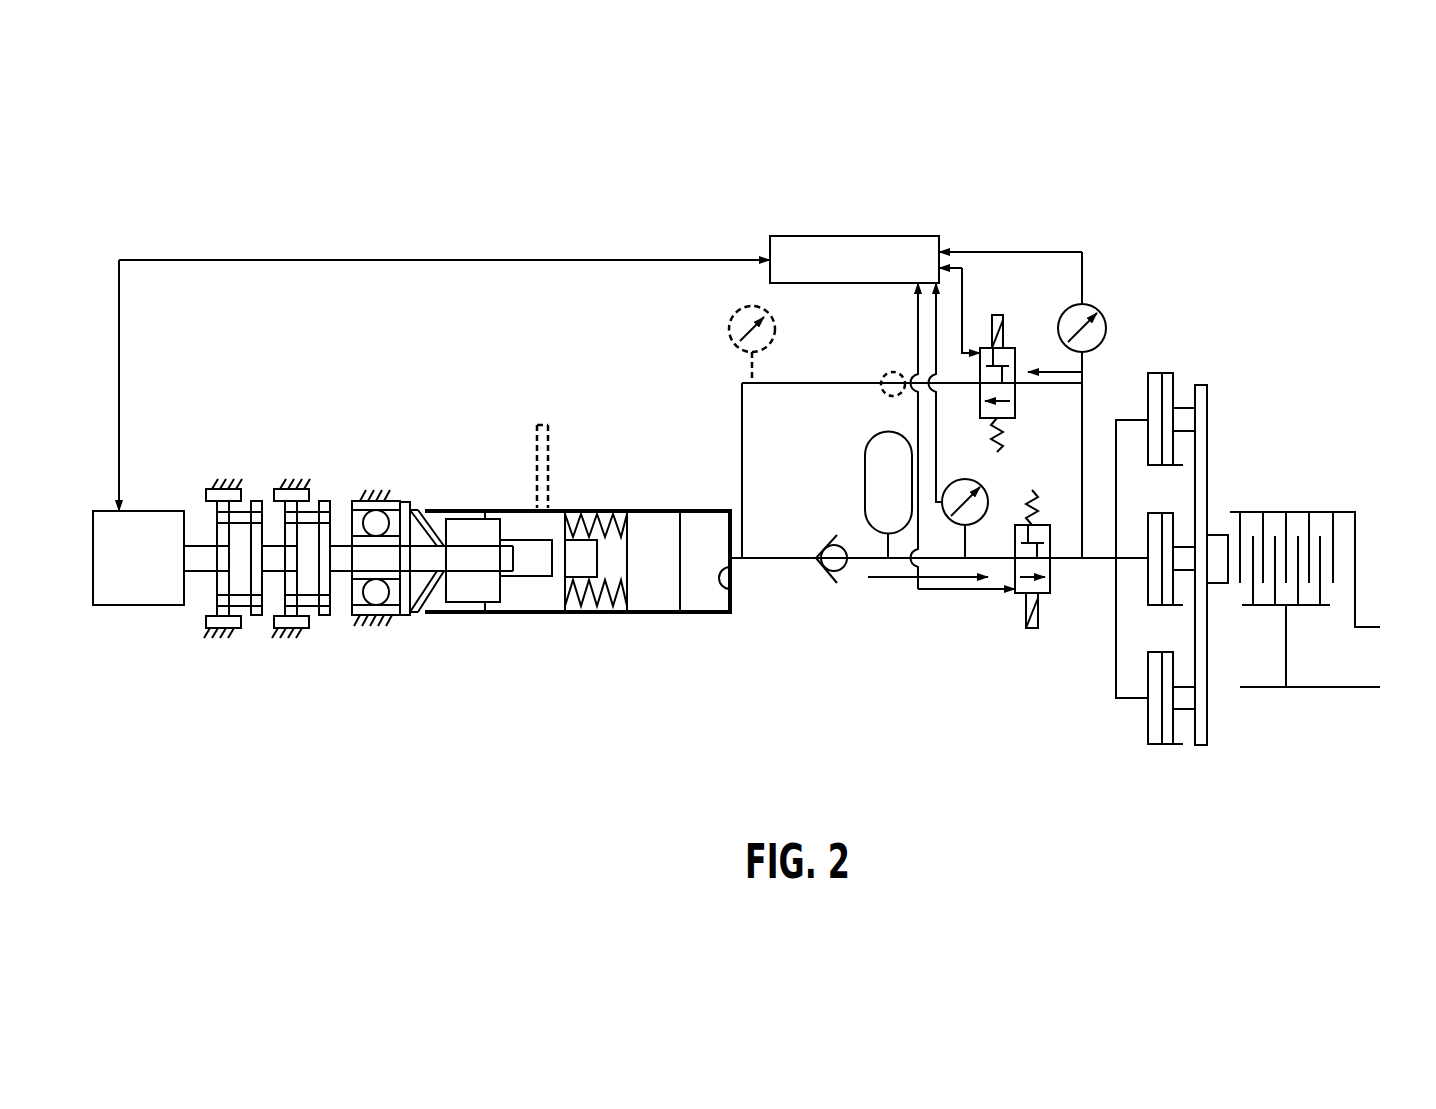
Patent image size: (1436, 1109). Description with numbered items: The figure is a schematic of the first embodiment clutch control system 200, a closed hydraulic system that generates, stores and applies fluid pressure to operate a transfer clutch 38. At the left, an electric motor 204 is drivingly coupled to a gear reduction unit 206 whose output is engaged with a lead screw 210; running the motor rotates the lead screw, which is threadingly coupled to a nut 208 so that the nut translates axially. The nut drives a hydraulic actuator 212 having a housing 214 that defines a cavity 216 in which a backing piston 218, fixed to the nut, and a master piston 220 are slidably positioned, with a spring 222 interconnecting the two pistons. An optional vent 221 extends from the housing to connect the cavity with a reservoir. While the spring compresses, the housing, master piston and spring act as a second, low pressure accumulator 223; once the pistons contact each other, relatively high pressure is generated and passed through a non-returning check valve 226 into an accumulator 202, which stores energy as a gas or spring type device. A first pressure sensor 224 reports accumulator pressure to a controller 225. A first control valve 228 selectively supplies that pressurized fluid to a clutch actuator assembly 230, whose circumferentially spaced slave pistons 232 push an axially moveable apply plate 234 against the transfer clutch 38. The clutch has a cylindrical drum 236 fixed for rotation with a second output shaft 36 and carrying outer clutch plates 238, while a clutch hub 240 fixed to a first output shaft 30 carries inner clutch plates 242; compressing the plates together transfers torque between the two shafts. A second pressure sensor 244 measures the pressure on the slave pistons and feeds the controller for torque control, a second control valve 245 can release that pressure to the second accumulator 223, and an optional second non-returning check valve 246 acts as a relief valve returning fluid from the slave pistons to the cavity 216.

The first output shaft 30 is at (1362, 690).
The second output shaft 36 is at (1378, 627).
The transfer clutch 38 is at (1270, 512).
The clutch control system 200 is at (517, 385).
The accumulator 202 is at (865, 470).
The electric motor 204 is at (160, 511).
The gear reduction unit 206 is at (320, 650).
The nut 208 is at (463, 614).
The lead screw 210 is at (421, 510).
The hydraulic actuator 212 is at (600, 645).
The housing 214 is at (722, 614).
The cavity 216 is at (730, 590).
The backing piston 218 is at (532, 614).
The master piston 220 is at (653, 511).
The vent 221 is at (548, 425).
The spring 222 is at (592, 511).
The second accumulator 223 is at (692, 614).
The first pressure sensor 224 is at (987, 478).
The controller 225 is at (780, 246).
The non-returning check valve 226 is at (826, 572).
The first control valve 228 is at (1017, 594).
The clutch actuator assembly 230 is at (1189, 763).
The slave pistons 232 is at (1165, 395).
The apply plate 234 is at (1210, 693).
The cylindrical drum 236 is at (1345, 512).
The outer clutch plates 238 is at (1335, 562).
The clutch hub 240 is at (1288, 640).
The inner clutch plates 242 is at (1313, 585).
The second pressure sensor 244 is at (1100, 312).
The second control valve 245 is at (1010, 345).
The second non-returning check valve 246 is at (885, 373).